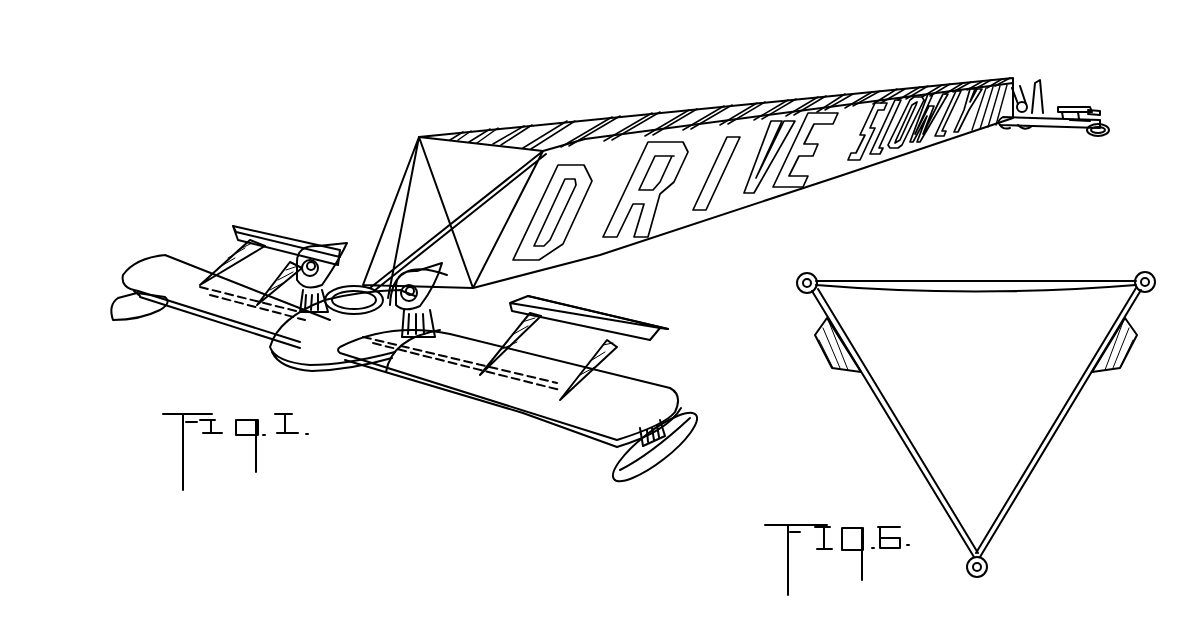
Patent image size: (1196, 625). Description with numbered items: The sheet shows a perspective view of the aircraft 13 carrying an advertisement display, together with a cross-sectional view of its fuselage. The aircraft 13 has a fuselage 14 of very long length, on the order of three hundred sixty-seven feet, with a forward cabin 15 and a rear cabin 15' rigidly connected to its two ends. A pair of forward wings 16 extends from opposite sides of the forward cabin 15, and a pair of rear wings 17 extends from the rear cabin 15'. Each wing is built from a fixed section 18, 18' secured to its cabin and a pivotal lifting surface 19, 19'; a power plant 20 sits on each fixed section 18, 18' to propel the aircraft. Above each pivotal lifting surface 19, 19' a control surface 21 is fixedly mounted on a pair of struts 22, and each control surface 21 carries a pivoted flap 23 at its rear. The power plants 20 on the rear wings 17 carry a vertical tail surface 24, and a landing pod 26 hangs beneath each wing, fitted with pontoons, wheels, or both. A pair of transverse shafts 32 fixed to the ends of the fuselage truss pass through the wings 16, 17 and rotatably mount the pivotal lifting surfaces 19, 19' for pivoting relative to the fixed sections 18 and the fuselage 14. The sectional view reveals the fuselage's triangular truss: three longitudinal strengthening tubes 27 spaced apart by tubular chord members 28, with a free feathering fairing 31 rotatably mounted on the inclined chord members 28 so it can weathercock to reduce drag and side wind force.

In FIG. 1, the aircraft 13 is at (362, 95).
In FIG. 1, the fuselage 14 is at (667, 113).
In FIG. 1, the forward cabin 15 is at (328, 341).
In FIG. 1, the forward wings 16 is at (220, 322).
In FIG. 1, the rear wings 17 is at (1050, 128).
In FIG. 1, the fixed section 18 is at (389, 371).
In FIG. 1, the pivotal lifting surface 19 is at (513, 408).
In FIG. 1, the power plant 20 is at (348, 248).
In FIG. 1, the control surface 21 is at (242, 232).
In FIG. 1, the struts 22 is at (1100, 113).
In FIG. 1, the flap 23 is at (603, 311).
In FIG. 1, the vertical tail surface 24 is at (1037, 86).
In FIG. 1, the landing pod 26 is at (688, 423).
In FIG. 6, the strengthening tubes 27 is at (810, 277).
In FIG. 6, the chord members 28 is at (973, 285).
In FIG. 6, the free feathering fairing 31 is at (833, 352).
In FIG. 1, the transverse shafts 32 is at (217, 297).
In FIG. 1, the rear cabin 15' is at (983, 147).
In FIG. 1, the fixed section 18' is at (1016, 148).
In FIG. 1, the pivotal lifting surface 19' is at (1094, 146).